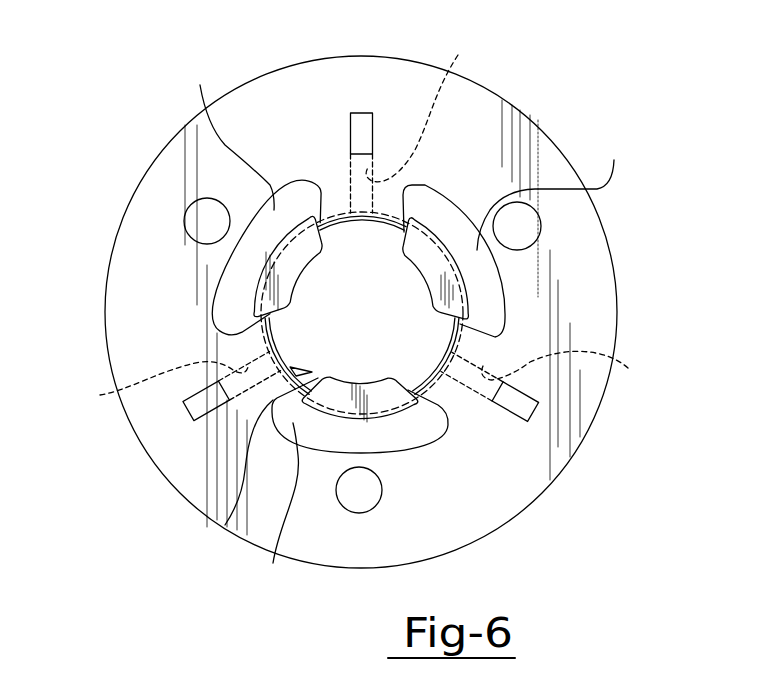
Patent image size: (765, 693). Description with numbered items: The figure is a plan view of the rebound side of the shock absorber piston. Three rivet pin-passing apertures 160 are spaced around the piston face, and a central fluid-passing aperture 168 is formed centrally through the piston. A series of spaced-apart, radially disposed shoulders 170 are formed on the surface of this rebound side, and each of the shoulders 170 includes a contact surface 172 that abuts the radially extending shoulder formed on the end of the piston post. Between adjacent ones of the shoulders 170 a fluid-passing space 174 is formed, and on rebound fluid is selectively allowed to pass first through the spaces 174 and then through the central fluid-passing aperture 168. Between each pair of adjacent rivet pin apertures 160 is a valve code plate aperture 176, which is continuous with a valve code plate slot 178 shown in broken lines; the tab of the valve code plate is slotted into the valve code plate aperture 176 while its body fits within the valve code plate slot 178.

The rivet pin-passing apertures 160 is at (197, 230).
The central fluid-passing aperture 168 is at (227, 528).
The shoulders 170 is at (412, 327).
The contact surface 172 is at (278, 292).
The fluid-passing space 174 is at (430, 327).
The valve code plate aperture 176 is at (373, 127).
The valve code plate slot 178 is at (365, 221).